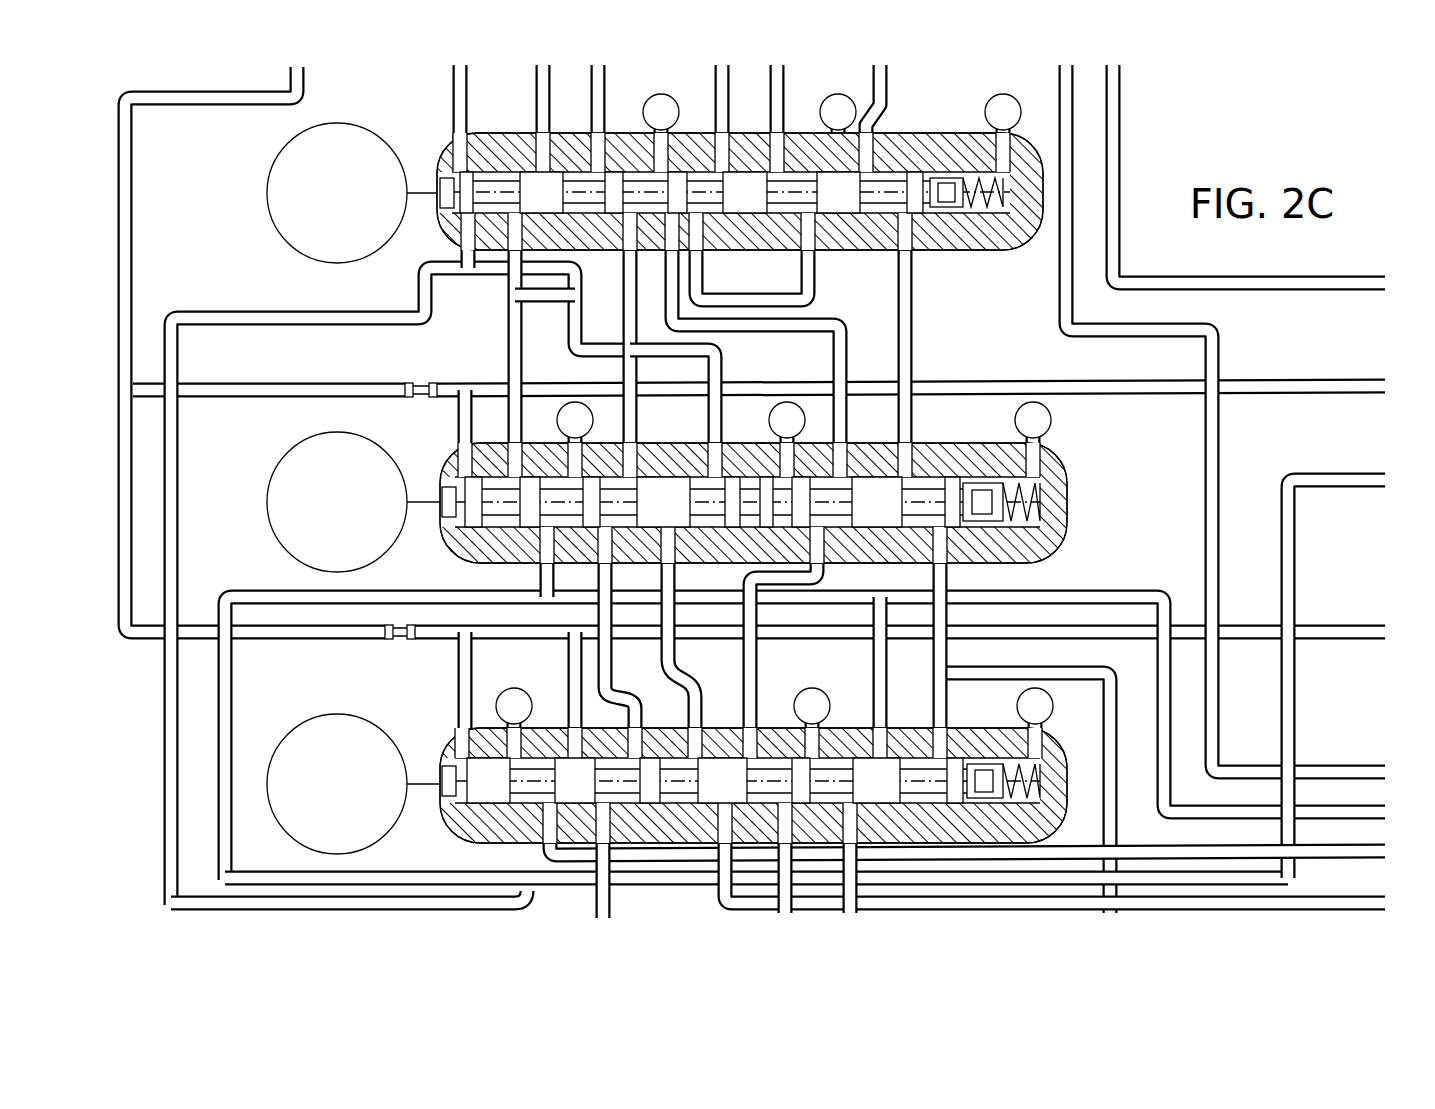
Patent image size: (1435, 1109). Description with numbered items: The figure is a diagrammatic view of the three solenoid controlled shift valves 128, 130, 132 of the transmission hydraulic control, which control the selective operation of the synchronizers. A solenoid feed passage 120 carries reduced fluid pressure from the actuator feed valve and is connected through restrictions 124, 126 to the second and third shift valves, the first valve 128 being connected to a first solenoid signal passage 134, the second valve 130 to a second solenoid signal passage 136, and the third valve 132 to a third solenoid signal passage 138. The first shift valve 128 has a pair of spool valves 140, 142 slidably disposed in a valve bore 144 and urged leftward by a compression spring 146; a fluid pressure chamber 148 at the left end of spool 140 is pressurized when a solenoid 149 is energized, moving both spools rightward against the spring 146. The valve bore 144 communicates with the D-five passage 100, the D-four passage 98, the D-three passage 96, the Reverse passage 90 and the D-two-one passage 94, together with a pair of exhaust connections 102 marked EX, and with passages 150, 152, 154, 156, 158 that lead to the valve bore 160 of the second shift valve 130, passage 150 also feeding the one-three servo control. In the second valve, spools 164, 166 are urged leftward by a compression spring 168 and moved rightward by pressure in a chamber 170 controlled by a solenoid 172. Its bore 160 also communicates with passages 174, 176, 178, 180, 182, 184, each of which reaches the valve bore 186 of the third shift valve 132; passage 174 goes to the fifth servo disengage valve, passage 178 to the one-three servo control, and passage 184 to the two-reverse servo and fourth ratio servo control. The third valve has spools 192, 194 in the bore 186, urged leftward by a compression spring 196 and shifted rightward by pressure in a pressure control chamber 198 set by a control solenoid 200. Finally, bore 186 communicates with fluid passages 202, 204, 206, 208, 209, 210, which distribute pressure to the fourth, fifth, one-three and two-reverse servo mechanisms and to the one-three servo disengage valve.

The Reverse passage 90 is at (604, 93).
The D2-1 passage 94 is at (537, 125).
The D3 passage 96 is at (728, 128).
The D4 passage 98 is at (798, 78).
The D5 passage 100 is at (886, 118).
The exhaust connections 102 is at (674, 100).
The solenoid feed passage 120 is at (245, 104).
The restriction 124 is at (415, 385).
The restriction 126 is at (395, 640).
The solenoid controlled shift valve 128 is at (696, 187).
The solenoid controlled shift valve 130 is at (755, 497).
The solenoid controlled shift valve 132 is at (736, 777).
The first solenoid signal passage 134 is at (452, 103).
The second solenoid signal passage 136 is at (766, 384).
The third solenoid signal passage 138 is at (1188, 628).
The spool valve 140 is at (585, 190).
The spool valve 142 is at (793, 190).
The valve bore 144 is at (775, 215).
The compression spring 146 is at (975, 232).
The fluid pressure chamber 148 is at (469, 262).
The solenoid 149 is at (300, 222).
The passage 150 is at (430, 300).
The passage 152 is at (637, 270).
The passage 154 is at (790, 332).
The passage 156 is at (815, 280).
The passage 158 is at (912, 325).
The valve bore 160 is at (925, 500).
The valve spool 164 is at (680, 488).
The valve spool 166 is at (876, 488).
The compression spring 168 is at (1068, 493).
The chamber 170 is at (488, 552).
The solenoid 172 is at (300, 545).
The passage 174 is at (568, 686).
The passage 176 is at (607, 572).
The passage 178 is at (689, 698).
The passage 180 is at (745, 604).
The passage 182 is at (818, 581).
The passage 184 is at (1098, 590).
The valve bore 186 is at (925, 758).
The valve spool 192 is at (720, 778).
The valve spool 194 is at (865, 778).
The compression spring 196 is at (1080, 760).
The pressure control chamber 198 is at (478, 838).
The control solenoid 200 is at (300, 730).
The fluid passage 202 is at (568, 862).
The fluid passage 204 is at (606, 855).
The fluid passage 206 is at (722, 858).
The fluid passage 208 is at (790, 878).
The fluid passage 209 is at (955, 856).
The fluid passage 210 is at (1213, 900).